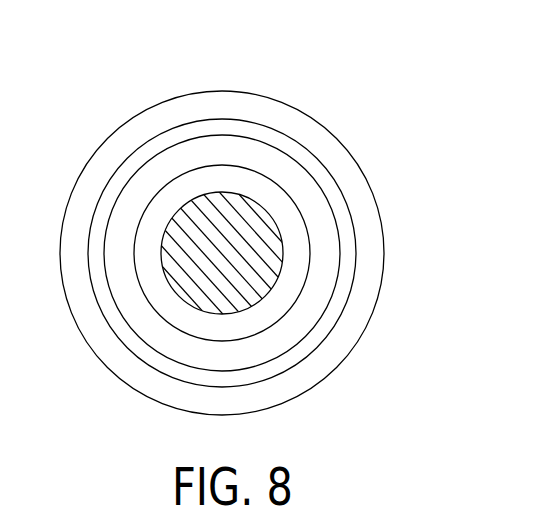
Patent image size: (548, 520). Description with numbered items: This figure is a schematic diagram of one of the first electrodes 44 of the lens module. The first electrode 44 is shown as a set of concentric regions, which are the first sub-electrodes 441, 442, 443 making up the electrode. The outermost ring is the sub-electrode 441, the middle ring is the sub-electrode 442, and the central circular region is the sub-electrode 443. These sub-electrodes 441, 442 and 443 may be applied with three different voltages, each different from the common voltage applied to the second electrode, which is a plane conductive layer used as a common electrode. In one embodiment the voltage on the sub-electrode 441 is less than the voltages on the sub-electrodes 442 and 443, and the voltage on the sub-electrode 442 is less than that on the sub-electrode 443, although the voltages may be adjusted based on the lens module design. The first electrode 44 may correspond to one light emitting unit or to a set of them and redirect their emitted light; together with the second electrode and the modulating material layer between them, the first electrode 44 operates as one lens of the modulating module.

The first electrode 44 is at (356, 71).
The first sub-electrode 441 is at (357, 182).
The second sub-electrode 442 is at (325, 245).
The third sub-electrode 443 is at (257, 280).